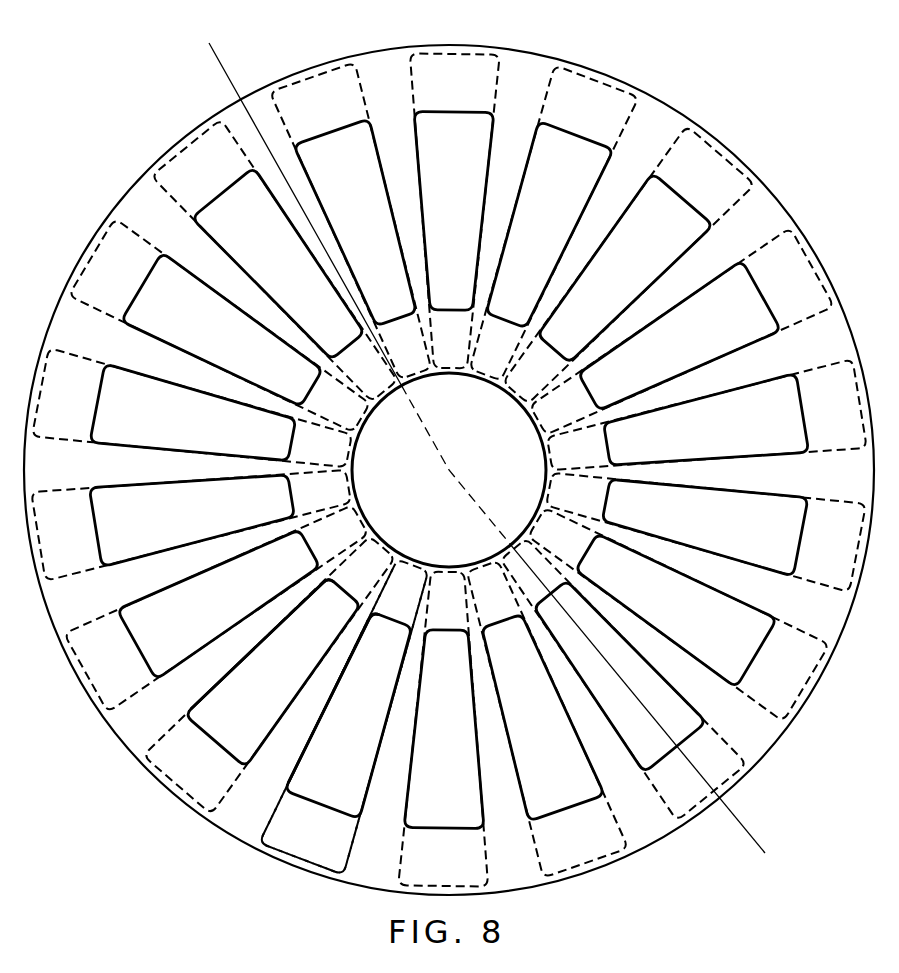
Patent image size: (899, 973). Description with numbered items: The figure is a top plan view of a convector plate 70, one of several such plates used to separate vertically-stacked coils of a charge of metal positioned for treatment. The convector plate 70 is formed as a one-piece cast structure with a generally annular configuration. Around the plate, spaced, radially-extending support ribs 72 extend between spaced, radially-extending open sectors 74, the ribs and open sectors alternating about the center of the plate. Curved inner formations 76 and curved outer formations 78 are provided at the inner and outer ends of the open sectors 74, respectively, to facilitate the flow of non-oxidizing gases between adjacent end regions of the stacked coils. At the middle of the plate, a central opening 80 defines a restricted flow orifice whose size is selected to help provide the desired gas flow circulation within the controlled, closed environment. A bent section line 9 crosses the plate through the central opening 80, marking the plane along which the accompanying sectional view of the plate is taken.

The convector plate 70 is at (737, 112).
The support ribs 72 is at (235, 653).
The open sectors 74 is at (280, 712).
The curved inner formations 76 is at (424, 574).
The curved outer formations 78 is at (300, 838).
The central opening 80 is at (355, 469).
The section line 9- 9 is at (209, 43).